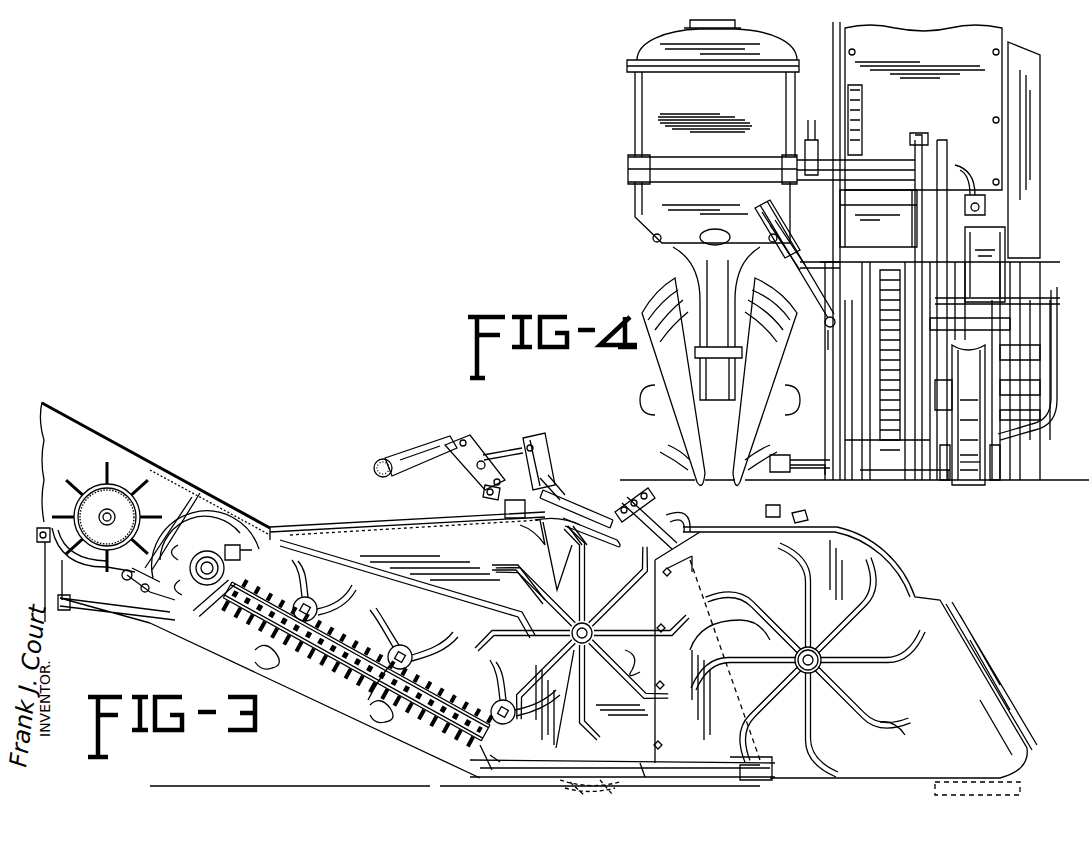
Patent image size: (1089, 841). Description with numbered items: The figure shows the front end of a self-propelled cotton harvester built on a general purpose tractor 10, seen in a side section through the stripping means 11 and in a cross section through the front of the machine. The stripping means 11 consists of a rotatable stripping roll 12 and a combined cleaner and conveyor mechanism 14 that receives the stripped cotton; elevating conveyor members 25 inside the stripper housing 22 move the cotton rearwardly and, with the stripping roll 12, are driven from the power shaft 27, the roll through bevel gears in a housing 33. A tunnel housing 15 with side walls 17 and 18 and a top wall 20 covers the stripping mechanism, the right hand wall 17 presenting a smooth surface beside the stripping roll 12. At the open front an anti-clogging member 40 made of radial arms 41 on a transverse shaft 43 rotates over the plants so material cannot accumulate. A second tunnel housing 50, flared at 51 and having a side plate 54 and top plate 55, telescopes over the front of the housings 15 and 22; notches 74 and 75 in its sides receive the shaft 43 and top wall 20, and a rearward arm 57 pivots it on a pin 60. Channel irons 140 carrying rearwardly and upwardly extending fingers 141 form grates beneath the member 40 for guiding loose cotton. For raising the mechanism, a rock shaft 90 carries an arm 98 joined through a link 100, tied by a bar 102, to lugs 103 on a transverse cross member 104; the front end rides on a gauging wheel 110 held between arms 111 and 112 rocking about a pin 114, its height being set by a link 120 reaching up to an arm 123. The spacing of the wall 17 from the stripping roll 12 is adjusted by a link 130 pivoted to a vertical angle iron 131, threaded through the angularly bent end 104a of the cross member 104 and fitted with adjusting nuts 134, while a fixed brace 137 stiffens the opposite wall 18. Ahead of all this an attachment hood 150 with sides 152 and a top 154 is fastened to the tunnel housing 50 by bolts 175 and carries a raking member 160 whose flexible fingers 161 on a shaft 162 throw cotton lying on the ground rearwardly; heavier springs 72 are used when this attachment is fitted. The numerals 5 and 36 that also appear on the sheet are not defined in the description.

In FIG. 3, the sprocket wheel 5 is at (148, 540).
In FIG. 4, the tractor 10 is at (636, 95).
In FIG. 3, the stripping means 11 is at (312, 672).
In FIG. 3, the stripping roll 12 is at (342, 688).
In FIG. 3, the combined cleaner and conveyor mechanism 14 is at (166, 472).
In FIG. 3, the tunnel housing 15 is at (338, 529).
In FIG. 4, the right hand side wall 17 is at (845, 372).
In FIG. 4, the side wall 18 is at (943, 455).
In FIG. 3, the side wall 18 is at (426, 540).
In FIG. 4, the top wall 20 is at (878, 221).
In FIG. 3, the top wall 20 is at (382, 528).
In FIG. 4, the stripper housing 22 is at (1004, 250).
In FIG. 3, the stripper housing 22 is at (322, 572).
In FIG. 3, the elevating conveyor members 25 is at (398, 622).
In FIG. 3, the power shaft 27 is at (210, 555).
In FIG. 3, the bevel gear housing 33 is at (232, 550).
In FIG. 4, the discharge tube 36 is at (970, 415).
In FIG. 3, the rotatable anti-clogging member 40 is at (536, 578).
In FIG. 3, the radially extending arms 41 is at (616, 599).
In FIG. 4, the transverse shaft 43 is at (958, 338).
In FIG. 3, the transverse shaft 43 is at (568, 640).
In FIG. 3, the second tunnel housing 50 is at (612, 499).
In FIG. 3, the flared forward portion 51 is at (668, 528).
In FIG. 3, the side plate 54 is at (596, 556).
In FIG. 3, the top plate 55 is at (652, 543).
In FIG. 4, the rearwardly extending arm 57 is at (776, 455).
In FIG. 4, the pin 60 is at (810, 456).
In FIG. 4, the spring 72 is at (928, 243).
In FIG. 3, the notch 74 is at (642, 663).
In FIG. 3, the notch 75 is at (578, 530).
In FIG. 4, the rock shaft 90 is at (752, 172).
In FIG. 3, the rock shaft 90 is at (390, 455).
In FIG. 3, the arm 98 is at (427, 452).
In FIG. 3, the link 100 is at (478, 452).
In FIG. 3, the bar 102 is at (481, 467).
In FIG. 3, the upstanding lugs 103 is at (484, 493).
In FIG. 4, the transverse cross member 104 is at (813, 203).
In FIG. 3, the transverse cross member 104 is at (505, 510).
In FIG. 4, the angularly bent end 104a is at (770, 200).
In FIG. 4, the gauging wheel 110 is at (970, 462).
In FIG. 3, the gauging wheel 110 is at (665, 772).
In FIG. 4, the arm 111 is at (964, 486).
In FIG. 4, the arm 112 is at (995, 450).
In FIG. 4, the pin 114 is at (1000, 435).
In FIG. 4, the link 120 is at (937, 404).
In FIG. 3, the link 120 is at (540, 478).
In FIG. 3, the arm 123 is at (532, 453).
In FIG. 4, the link or brace 130 is at (840, 263).
In FIG. 4, the vertical angle iron 131 is at (828, 337).
In FIG. 4, the adjusting nuts 134 is at (808, 250).
In FIG. 4, the brace 137 is at (960, 200).
In FIG. 3, the channel irons 140 is at (740, 770).
In FIG. 3, the fingers 141 is at (622, 787).
In FIG. 3, the attachment tunnel 150 is at (763, 513).
In FIG. 3, the side member 152 is at (860, 553).
In FIG. 3, the top 154 is at (840, 526).
In FIG. 3, the rotating raking member 160 is at (855, 634).
In FIG. 3, the flexible ground engaging fingers 161 is at (890, 730).
In FIG. 3, the shaft 162 is at (823, 668).
In FIG. 3, the bolts 175 is at (700, 559).